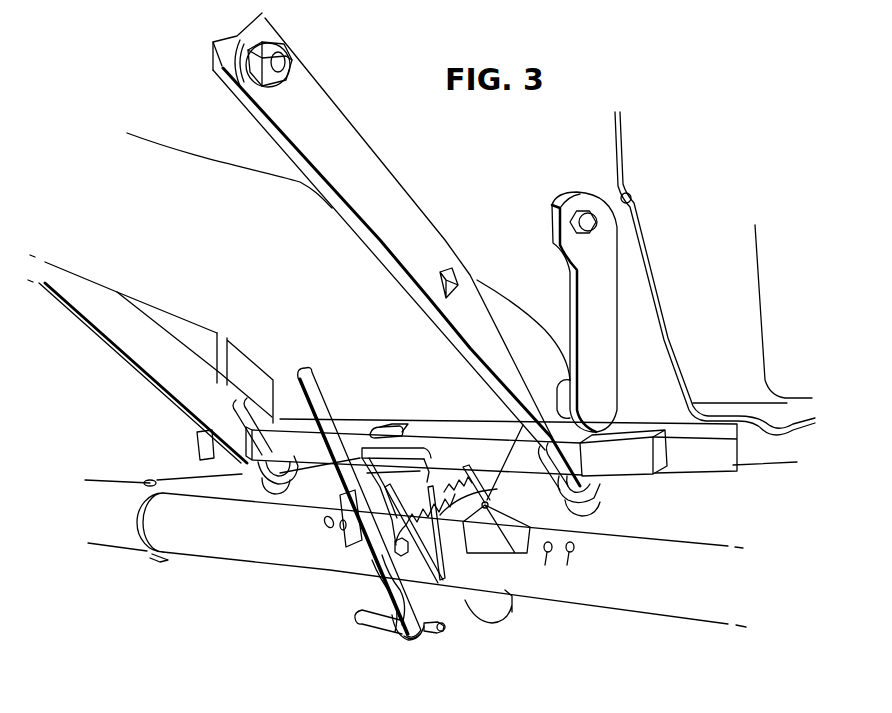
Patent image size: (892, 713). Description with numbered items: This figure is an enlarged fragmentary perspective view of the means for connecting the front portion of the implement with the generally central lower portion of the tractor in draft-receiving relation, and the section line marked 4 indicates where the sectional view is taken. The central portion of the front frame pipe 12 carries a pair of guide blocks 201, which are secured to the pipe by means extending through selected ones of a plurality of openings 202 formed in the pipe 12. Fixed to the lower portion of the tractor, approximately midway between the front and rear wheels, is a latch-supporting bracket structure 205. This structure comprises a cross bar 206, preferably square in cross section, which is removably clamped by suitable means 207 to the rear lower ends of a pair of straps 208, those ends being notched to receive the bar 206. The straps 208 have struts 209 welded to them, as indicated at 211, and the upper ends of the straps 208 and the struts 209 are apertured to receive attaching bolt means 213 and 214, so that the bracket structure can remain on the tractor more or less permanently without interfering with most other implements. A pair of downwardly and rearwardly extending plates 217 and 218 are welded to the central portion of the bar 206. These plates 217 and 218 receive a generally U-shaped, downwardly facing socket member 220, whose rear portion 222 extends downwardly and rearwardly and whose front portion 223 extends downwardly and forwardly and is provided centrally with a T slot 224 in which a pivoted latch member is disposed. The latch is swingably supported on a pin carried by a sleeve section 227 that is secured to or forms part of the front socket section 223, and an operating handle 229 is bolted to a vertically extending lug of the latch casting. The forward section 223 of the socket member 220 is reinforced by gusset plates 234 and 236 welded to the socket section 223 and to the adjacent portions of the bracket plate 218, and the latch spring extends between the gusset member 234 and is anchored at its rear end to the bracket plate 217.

The front frame pipe 12 is at (634, 610).
The guide blocks 201 is at (342, 505).
The openings 202 is at (335, 528).
The latch-supporting bracket structure 205 is at (422, 195).
The cross bar 206 is at (660, 464).
The clamping means 207 is at (300, 457).
The straps 208 is at (153, 368).
The struts 209 is at (585, 288).
The weld 211 is at (558, 388).
The attaching bolt means 213 is at (283, 60).
The attaching bolt means 214 is at (590, 220).
The bracket plate 217 is at (448, 445).
The bracket plate 218 is at (366, 446).
The socket member 220 is at (365, 601).
The rear portion of socket member 222 is at (496, 614).
The front socket section 223 is at (446, 630).
The T slot 224 is at (388, 634).
The sleeve section 227 is at (416, 638).
The operating handle 229 is at (322, 380).
The gusset plate 234 is at (496, 491).
The gusset plate 236 is at (394, 538).
The section line 4- 4 is at (440, 400).